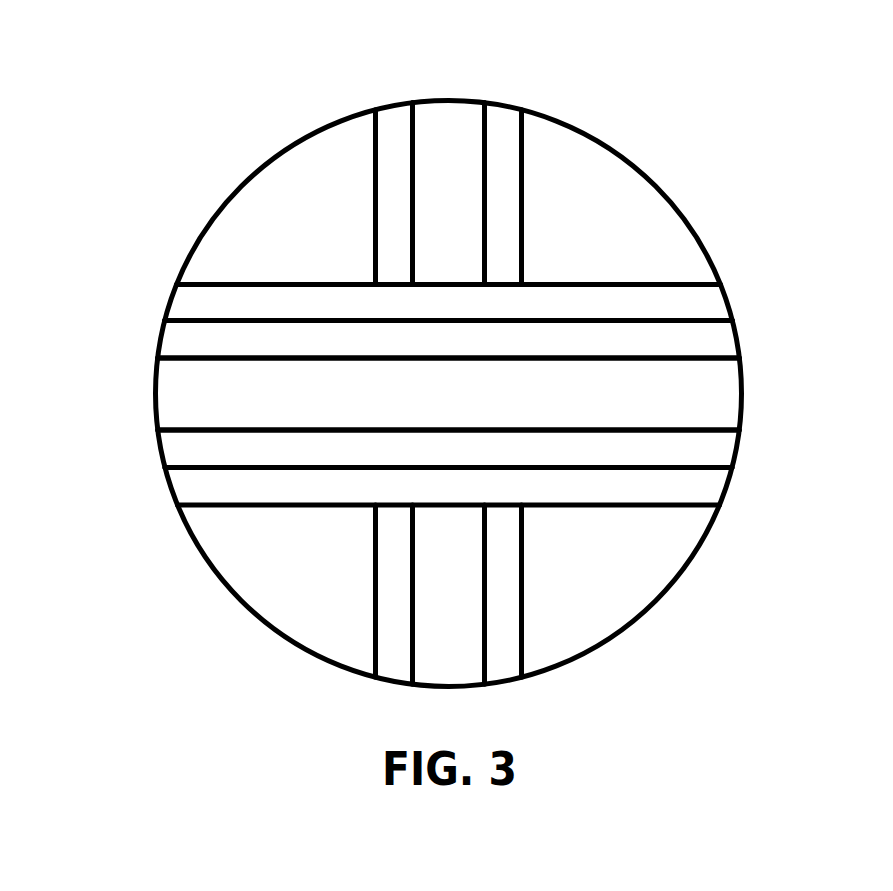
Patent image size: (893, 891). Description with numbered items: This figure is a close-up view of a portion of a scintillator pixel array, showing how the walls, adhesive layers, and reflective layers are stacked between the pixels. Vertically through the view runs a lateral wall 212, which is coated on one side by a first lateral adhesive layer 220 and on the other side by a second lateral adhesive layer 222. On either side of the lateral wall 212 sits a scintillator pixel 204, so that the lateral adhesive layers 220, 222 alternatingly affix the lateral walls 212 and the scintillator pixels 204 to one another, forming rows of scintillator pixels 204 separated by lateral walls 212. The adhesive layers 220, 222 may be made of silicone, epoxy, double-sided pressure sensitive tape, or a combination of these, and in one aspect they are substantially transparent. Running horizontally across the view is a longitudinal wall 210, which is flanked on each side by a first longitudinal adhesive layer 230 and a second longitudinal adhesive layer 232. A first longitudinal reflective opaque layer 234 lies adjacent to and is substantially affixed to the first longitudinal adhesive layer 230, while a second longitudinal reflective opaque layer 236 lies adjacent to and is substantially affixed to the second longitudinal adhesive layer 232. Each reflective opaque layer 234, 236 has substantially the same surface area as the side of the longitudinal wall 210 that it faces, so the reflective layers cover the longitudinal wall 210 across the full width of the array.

The scintillator pixel 204 is at (316, 245).
The longitudinal wall 210 is at (211, 395).
The lateral wall 212 is at (448, 135).
The first lateral adhesive layer 220 is at (392, 198).
The second lateral adhesive layer 222 is at (505, 198).
The first longitudinal adhesive layer 230 is at (203, 348).
The second longitudinal adhesive layer 232 is at (200, 441).
The first longitudinal reflective opaque layer 234 is at (252, 302).
The second longitudinal reflective opaque layer 236 is at (252, 487).